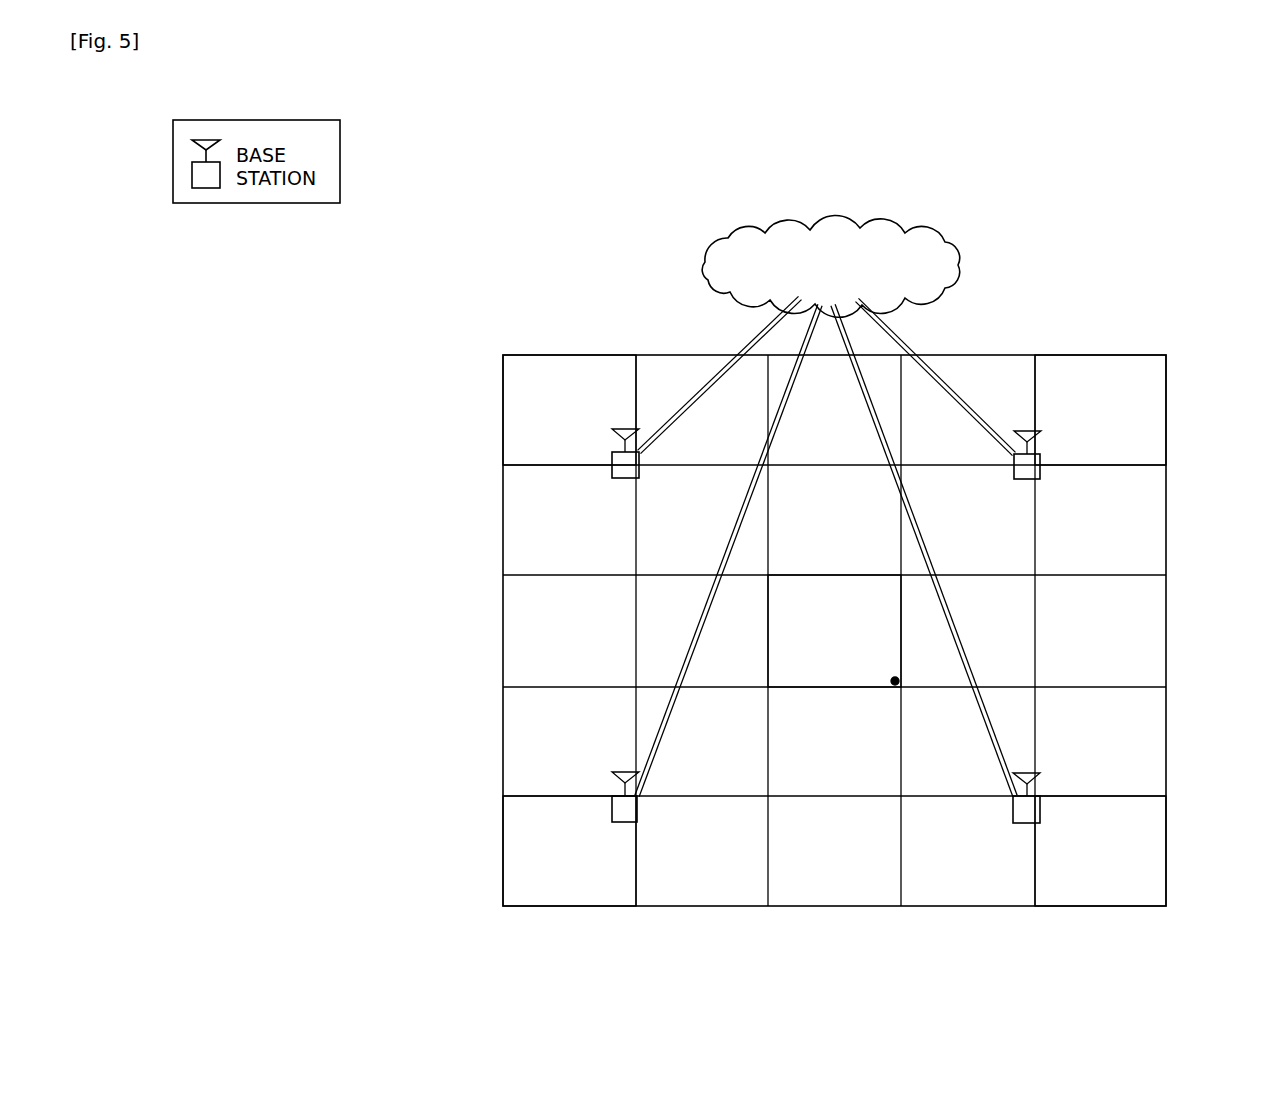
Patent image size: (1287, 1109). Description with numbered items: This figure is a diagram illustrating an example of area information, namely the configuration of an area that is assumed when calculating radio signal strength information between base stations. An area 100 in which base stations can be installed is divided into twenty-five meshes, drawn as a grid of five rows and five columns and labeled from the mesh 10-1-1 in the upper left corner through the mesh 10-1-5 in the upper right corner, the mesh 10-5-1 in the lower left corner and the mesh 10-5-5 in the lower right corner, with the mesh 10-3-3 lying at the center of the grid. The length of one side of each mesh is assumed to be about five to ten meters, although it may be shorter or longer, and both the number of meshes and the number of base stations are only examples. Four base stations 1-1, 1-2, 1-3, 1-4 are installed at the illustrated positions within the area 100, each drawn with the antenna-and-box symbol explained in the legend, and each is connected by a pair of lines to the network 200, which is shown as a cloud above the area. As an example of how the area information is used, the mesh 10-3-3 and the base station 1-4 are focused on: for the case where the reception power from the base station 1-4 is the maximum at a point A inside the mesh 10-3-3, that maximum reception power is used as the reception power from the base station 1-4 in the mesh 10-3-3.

The network 200 is at (910, 224).
The area 100 is at (1100, 355).
The mesh 10-1-1 is at (567, 369).
The mesh 10-1-5 is at (1156, 411).
The mesh 10-5-1 is at (567, 893).
The mesh 10-5-5 is at (1156, 851).
The mesh 10-3-3 is at (803, 657).
The base station 1-1 is at (617, 479).
The base station 1-2 is at (1018, 480).
The base station 1-3 is at (617, 823).
The base station 1-4 is at (1018, 824).
The point A is at (893, 679).